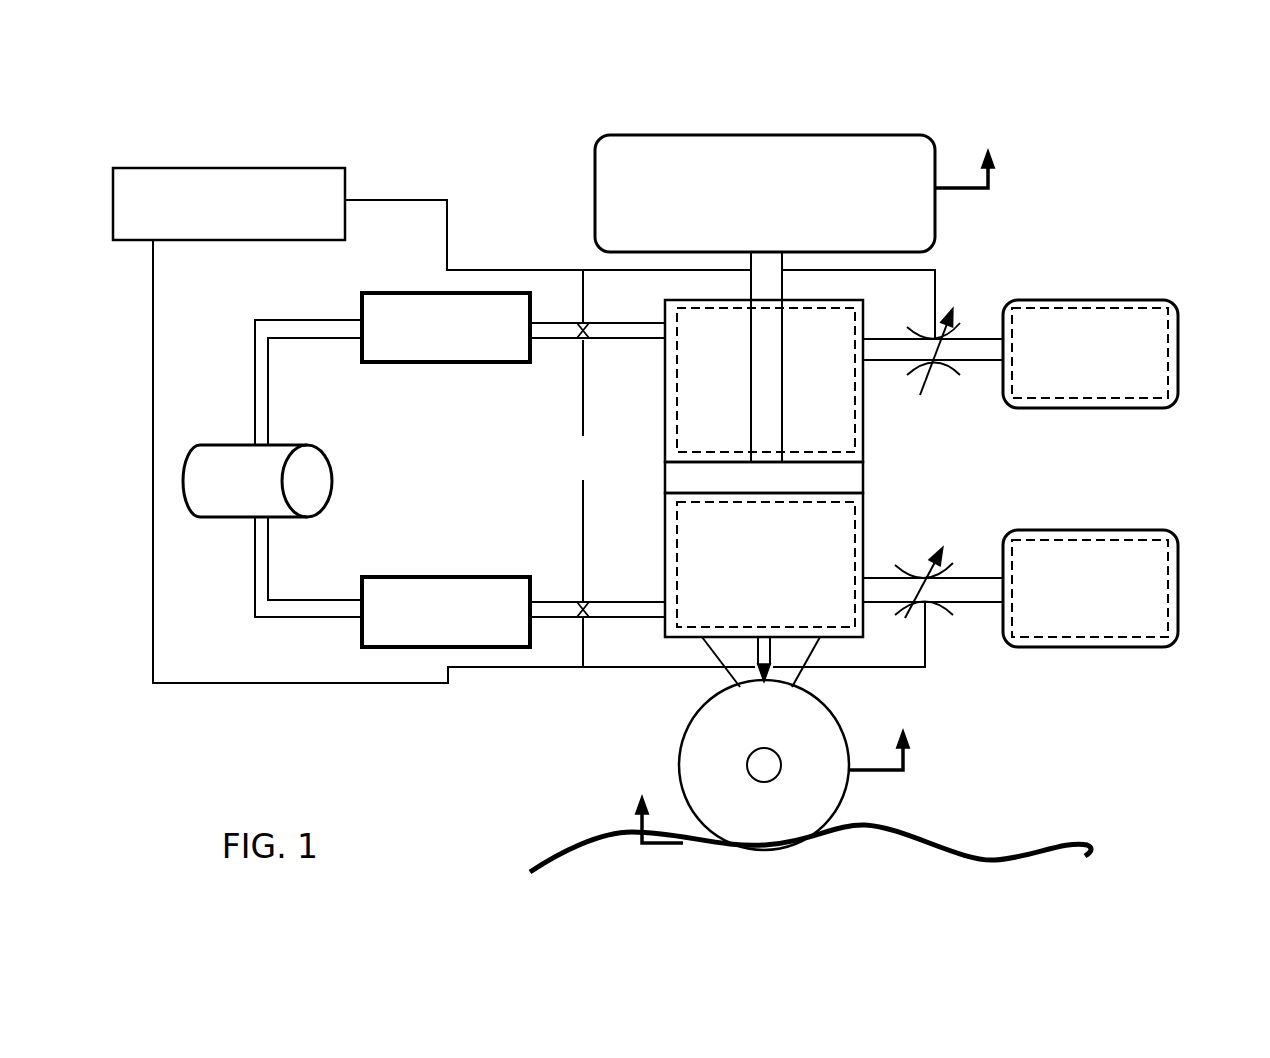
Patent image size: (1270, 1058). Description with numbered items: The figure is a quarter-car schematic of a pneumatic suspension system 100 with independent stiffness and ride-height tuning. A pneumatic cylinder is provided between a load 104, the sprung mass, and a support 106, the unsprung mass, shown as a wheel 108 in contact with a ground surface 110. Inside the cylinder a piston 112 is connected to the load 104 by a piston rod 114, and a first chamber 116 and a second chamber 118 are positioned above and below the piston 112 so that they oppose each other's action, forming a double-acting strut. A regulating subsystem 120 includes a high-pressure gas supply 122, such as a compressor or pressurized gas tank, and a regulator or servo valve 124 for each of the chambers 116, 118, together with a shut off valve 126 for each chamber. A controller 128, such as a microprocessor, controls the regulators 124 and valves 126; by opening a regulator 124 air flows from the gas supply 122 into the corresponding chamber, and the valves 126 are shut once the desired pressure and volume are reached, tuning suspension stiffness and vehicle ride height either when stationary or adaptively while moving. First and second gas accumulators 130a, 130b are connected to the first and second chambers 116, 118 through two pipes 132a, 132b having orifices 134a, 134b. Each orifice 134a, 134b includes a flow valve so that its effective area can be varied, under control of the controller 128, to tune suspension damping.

The pneumatic suspension system 100 is at (1142, 209).
The load 104 is at (665, 135).
The support 106 is at (1017, 769).
The wheel 108 is at (845, 795).
The ground surface 110 is at (1010, 855).
The piston 112 is at (697, 477).
The piston rod 114 is at (765, 278).
The first chamber 116 is at (707, 380).
The second chamber 118 is at (715, 535).
The regulating subsystem 120 is at (376, 133).
The high-pressure gas supply 122 is at (247, 443).
The regulator or servo valve 124 is at (452, 348).
The shut off valve 126 is at (580, 468).
The controller 128 is at (277, 168).
The first gas accumulator 130a is at (1180, 357).
The second gas accumulator 130b is at (1180, 583).
The pipe/tube 132a is at (975, 338).
The pipe/tube 132b is at (962, 582).
The orifice 134a is at (920, 395).
The orifice 134b is at (918, 577).